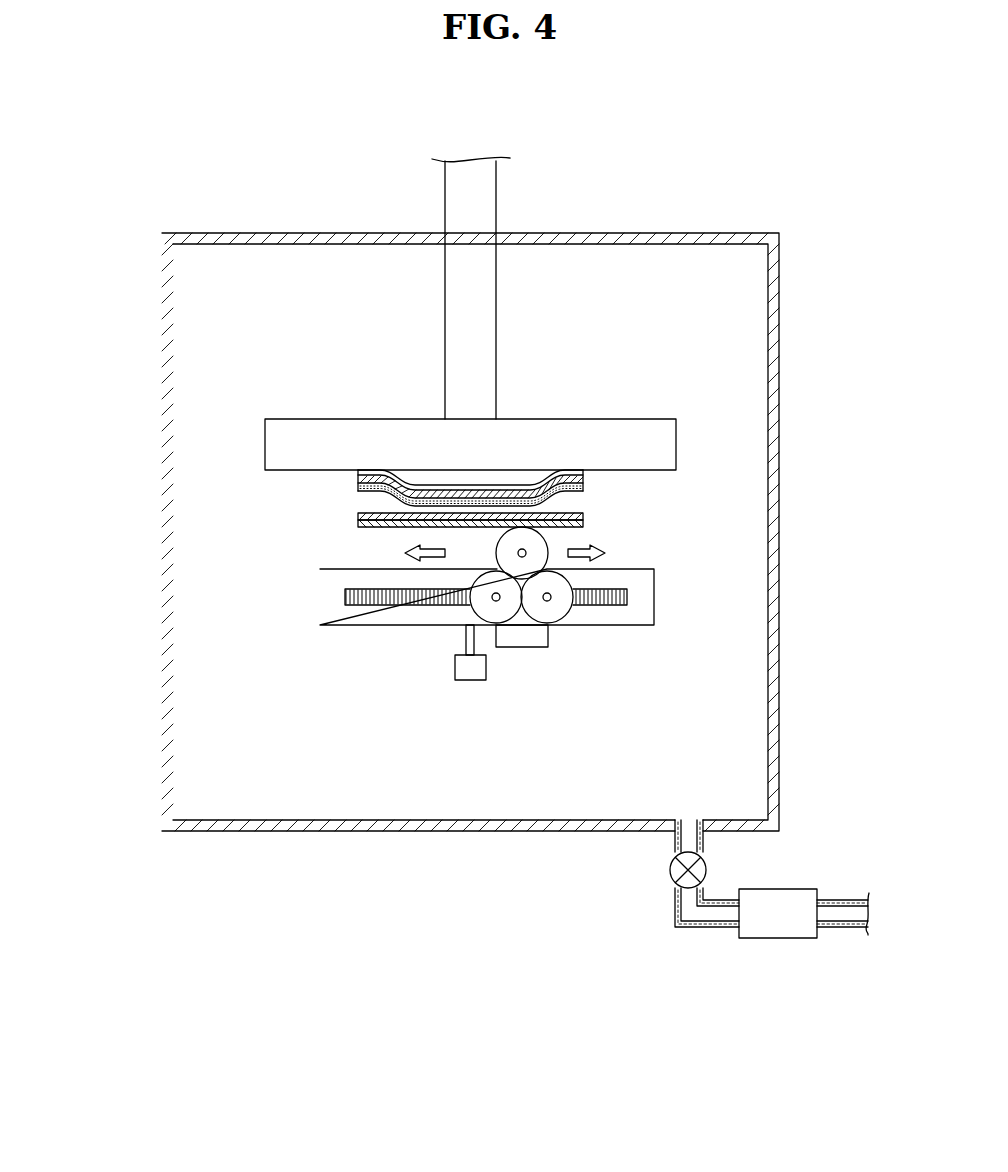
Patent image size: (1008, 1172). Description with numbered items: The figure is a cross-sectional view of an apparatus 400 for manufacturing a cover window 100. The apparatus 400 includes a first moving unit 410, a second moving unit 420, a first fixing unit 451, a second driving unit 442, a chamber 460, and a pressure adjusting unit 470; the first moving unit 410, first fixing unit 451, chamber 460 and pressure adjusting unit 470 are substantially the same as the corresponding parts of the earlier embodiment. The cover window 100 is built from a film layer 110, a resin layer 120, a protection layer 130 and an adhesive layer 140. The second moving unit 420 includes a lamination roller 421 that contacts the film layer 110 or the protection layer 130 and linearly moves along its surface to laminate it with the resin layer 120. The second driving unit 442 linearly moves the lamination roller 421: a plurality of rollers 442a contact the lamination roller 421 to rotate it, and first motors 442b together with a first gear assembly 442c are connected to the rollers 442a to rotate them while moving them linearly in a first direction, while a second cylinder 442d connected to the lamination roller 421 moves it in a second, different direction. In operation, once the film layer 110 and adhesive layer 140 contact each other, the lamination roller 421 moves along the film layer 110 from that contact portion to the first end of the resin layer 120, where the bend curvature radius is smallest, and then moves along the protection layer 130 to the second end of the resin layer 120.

The cover window 100 is at (315, 543).
The film layer 110 is at (357, 516).
The resin layer 120 is at (357, 480).
The protection layer 130 is at (357, 523).
The adhesive layer 140 is at (357, 488).
The apparatus for manufacturing a cover window 400 is at (218, 148).
The first moving unit 410 is at (672, 447).
The second moving unit 420 is at (556, 548).
The lamination roller 421 is at (542, 562).
The second driving unit 442 is at (487, 673).
The rollers 442a is at (549, 654).
The first motor 442b is at (523, 638).
The first gear assembly 442c is at (410, 600).
The second cylinder 442d is at (472, 680).
The first fixing unit 451 is at (575, 472).
The chamber 460 is at (779, 331).
The pressure adjusting unit 470 is at (698, 945).